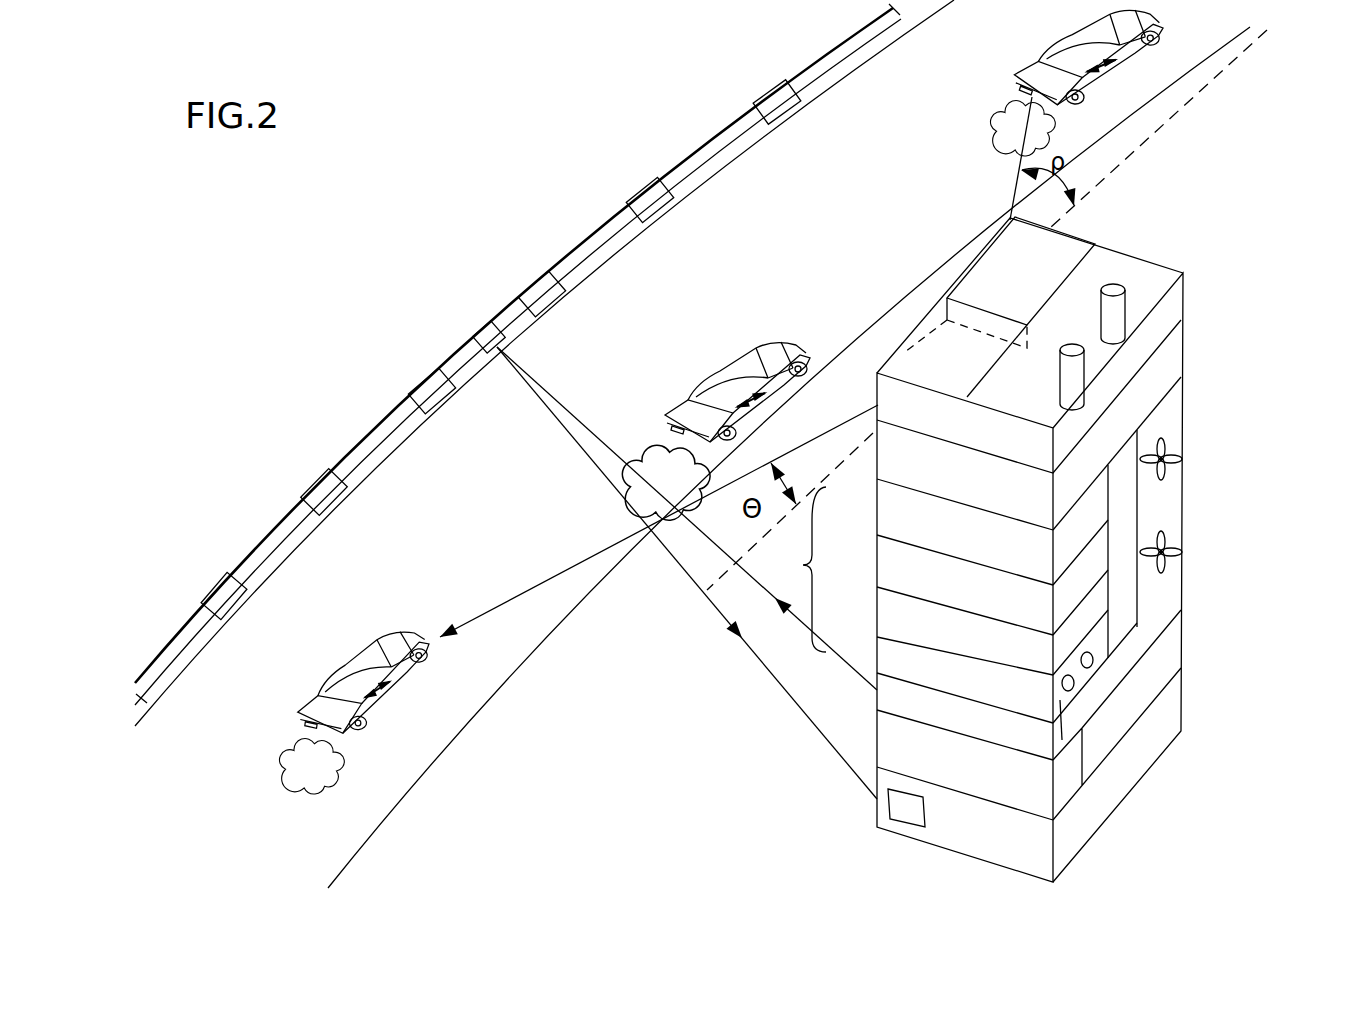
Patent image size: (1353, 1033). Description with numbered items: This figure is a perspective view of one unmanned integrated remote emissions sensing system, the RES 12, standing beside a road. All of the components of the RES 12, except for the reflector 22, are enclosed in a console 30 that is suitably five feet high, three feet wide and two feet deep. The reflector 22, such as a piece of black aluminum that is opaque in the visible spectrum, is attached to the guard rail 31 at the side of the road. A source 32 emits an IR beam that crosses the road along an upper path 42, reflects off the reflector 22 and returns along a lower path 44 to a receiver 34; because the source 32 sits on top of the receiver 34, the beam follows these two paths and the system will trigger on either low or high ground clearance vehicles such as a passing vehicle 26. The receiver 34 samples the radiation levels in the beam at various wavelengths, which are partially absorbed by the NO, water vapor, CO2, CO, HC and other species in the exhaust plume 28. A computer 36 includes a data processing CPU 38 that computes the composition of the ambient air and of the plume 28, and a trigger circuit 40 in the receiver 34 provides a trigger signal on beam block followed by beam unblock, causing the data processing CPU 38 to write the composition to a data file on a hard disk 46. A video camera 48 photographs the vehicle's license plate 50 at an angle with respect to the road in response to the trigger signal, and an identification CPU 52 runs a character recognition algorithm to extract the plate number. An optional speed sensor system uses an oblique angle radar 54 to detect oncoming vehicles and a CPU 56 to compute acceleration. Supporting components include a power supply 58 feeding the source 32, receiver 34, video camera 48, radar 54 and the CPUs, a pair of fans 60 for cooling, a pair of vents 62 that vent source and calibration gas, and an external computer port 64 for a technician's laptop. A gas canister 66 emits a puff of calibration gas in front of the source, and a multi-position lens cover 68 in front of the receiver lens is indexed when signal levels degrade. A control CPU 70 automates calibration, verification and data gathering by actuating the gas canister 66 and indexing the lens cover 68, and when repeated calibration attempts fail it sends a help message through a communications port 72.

The RES 12 is at (1243, 458).
The reflector 22 is at (489, 328).
The vehicle 26 is at (720, 386).
The exhaust plume 28 is at (650, 493).
The console 30 is at (1034, 389).
The roadway guardrail 31 is at (246, 512).
The source 32 is at (878, 706).
The receiver 34 is at (1181, 710).
The computer 36 is at (797, 569).
The data processing CPU 38 is at (879, 495).
The trigger circuit 40 is at (877, 741).
The upper path 42 is at (585, 412).
The lower path 44 is at (540, 398).
The hard disk 46 is at (1118, 538).
The video camera 48 is at (1072, 240).
The license plate 50 is at (1030, 96).
The identification CPU 52 is at (880, 556).
The oblique angle radar 54 is at (913, 334).
The CPU 56 is at (880, 598).
The power supply 58 is at (1167, 374).
The fans 60 is at (1175, 459).
The vents 62 is at (1130, 305).
The external computer port 64 is at (1093, 657).
The gas canister 66 is at (1176, 647).
The multi-position lens cover 68 is at (890, 811).
The control CPU 70 is at (880, 640).
The communications port 72 is at (1063, 700).